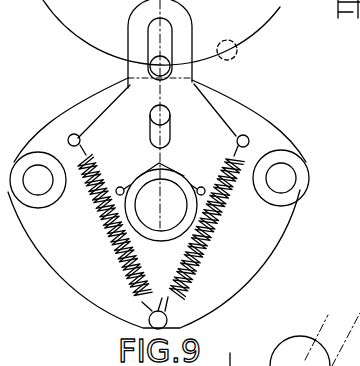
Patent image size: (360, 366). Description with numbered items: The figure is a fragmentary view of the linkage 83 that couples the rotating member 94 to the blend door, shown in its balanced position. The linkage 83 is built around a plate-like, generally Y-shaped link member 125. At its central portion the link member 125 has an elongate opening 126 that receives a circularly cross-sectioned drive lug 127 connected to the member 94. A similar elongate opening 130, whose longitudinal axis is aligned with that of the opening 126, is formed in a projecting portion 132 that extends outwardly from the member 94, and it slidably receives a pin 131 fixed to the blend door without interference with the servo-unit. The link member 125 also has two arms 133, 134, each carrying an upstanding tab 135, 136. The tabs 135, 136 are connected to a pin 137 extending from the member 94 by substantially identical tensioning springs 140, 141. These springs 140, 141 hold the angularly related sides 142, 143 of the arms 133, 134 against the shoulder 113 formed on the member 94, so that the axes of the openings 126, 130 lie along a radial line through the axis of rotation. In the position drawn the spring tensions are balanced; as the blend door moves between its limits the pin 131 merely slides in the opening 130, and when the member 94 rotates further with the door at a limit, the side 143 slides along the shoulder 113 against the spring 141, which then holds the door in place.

The linkage 83 is at (72, 93).
The member 94 is at (69, 281).
The shoulder 113 is at (171, 237).
The link member 125 is at (212, 120).
The elongate opening 126 is at (150, 132).
The drive lug 127 is at (150, 113).
The elongate opening 130 is at (148, 34).
The pin 131 is at (148, 68).
The projecting portion 132 is at (146, 14).
The arm 133 is at (82, 184).
The arm 134 is at (233, 188).
The upstanding tab 135 is at (70, 137).
The upstanding tab 136 is at (268, 133).
The pin 137 is at (167, 315).
The tensioning spring 140 is at (123, 257).
The tensioning spring 141 is at (194, 275).
The side 142 is at (129, 176).
The side 143 is at (199, 188).